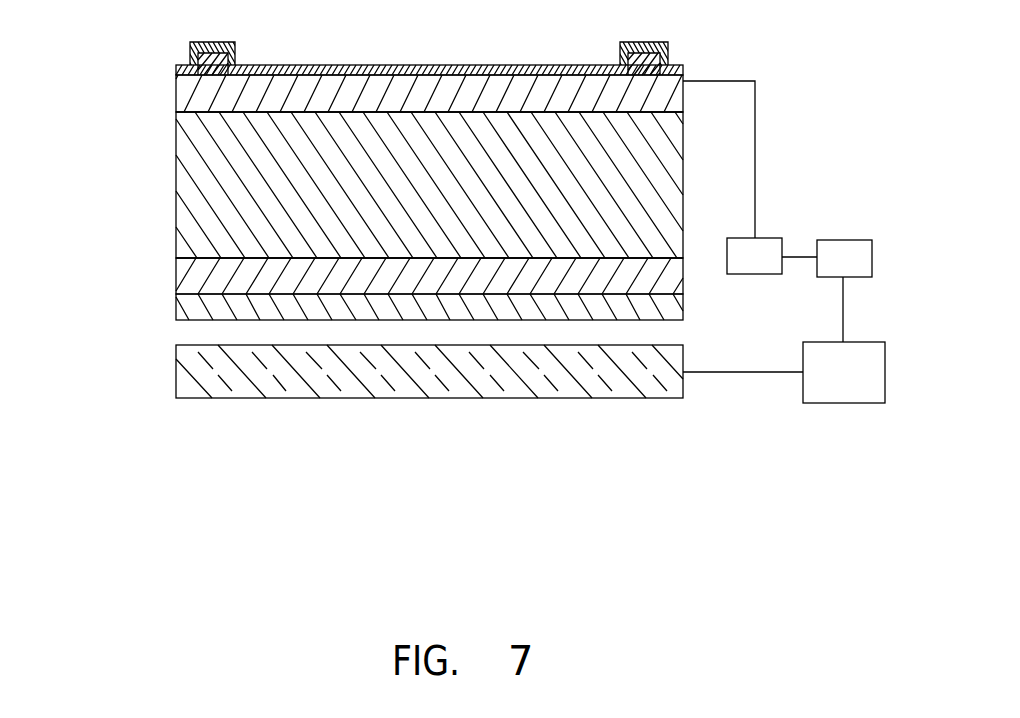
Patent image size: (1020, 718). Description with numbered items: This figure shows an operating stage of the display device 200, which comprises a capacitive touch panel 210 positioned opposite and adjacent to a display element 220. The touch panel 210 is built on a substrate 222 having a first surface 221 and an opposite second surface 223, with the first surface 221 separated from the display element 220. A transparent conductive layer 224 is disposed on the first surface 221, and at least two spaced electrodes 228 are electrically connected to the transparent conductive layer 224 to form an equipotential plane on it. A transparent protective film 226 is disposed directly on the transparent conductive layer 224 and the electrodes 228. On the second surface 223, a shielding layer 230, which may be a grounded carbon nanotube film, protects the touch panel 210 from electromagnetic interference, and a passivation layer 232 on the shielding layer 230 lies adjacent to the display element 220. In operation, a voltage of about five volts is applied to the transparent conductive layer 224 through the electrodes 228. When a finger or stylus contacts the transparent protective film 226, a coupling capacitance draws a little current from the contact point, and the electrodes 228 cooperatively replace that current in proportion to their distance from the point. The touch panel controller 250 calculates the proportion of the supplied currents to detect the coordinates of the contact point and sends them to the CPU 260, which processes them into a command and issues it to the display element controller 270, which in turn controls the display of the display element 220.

The display device 200 is at (688, 40).
The touch panel 210 is at (108, 2).
The display element 220 is at (193, 370).
The first surface 221 is at (623, 118).
The substrate 222 is at (190, 192).
The second surface 223 is at (617, 257).
The transparent conductive layer 224 is at (190, 96).
The transparent protective film 226 is at (203, 42).
The electrodes 228 is at (190, 54).
The shielding layer 230 is at (195, 283).
The passivation layer 232 is at (188, 310).
The touch panel controller 250 is at (773, 238).
The CPU 260 is at (862, 240).
The display element controller 270 is at (836, 404).